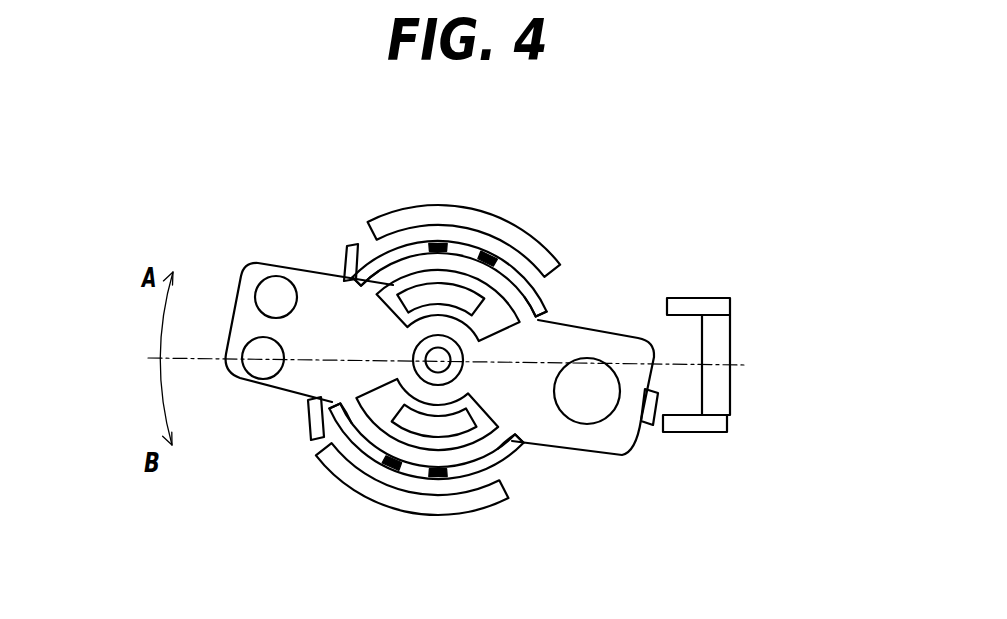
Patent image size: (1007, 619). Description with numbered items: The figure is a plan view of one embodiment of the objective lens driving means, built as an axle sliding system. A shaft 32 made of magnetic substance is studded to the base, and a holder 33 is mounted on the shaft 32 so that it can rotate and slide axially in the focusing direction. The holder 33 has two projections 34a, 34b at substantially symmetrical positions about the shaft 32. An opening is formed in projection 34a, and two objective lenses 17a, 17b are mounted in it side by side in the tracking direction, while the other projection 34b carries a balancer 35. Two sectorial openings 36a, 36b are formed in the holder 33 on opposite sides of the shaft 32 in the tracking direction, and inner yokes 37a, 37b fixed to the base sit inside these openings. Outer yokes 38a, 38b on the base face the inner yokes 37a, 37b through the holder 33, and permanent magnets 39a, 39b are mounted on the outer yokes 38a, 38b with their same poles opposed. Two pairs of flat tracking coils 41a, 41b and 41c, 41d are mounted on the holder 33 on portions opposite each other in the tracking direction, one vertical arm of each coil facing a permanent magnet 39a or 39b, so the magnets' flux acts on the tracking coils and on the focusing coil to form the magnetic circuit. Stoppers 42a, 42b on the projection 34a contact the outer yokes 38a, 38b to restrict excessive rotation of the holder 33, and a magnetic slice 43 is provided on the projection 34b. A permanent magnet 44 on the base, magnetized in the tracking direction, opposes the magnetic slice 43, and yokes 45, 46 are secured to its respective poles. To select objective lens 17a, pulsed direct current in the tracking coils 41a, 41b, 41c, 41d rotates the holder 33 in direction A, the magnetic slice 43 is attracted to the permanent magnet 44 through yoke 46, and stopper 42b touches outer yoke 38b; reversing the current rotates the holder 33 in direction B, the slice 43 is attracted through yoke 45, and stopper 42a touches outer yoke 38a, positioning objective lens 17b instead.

The objective lens 17a is at (263, 370).
The objective lens 17b is at (273, 290).
The shaft 32 is at (413, 355).
The holder 33 is at (431, 413).
The projection 34a is at (303, 392).
The projection 34b is at (617, 448).
The balancer 35 is at (587, 412).
The sectorial opening 36a is at (365, 415).
The sectorial opening 36b is at (511, 233).
The inner yoke 37a is at (458, 433).
The inner yoke 37b is at (447, 293).
The outer yoke 38a is at (377, 497).
The outer yoke 38b is at (523, 235).
The permanent magnet 39a is at (437, 497).
The permanent magnet 39b is at (535, 252).
The tracking coil 41a is at (345, 418).
The tracking coil 41b is at (512, 442).
The tracking coil 41c is at (413, 243).
The tracking coil 41d is at (541, 312).
The stopper 42a is at (317, 423).
The stopper 42b is at (347, 246).
The magnetic slice 43 is at (648, 427).
The permanent magnet 44 is at (722, 352).
The yoke 45 is at (709, 307).
The yoke 46 is at (700, 427).